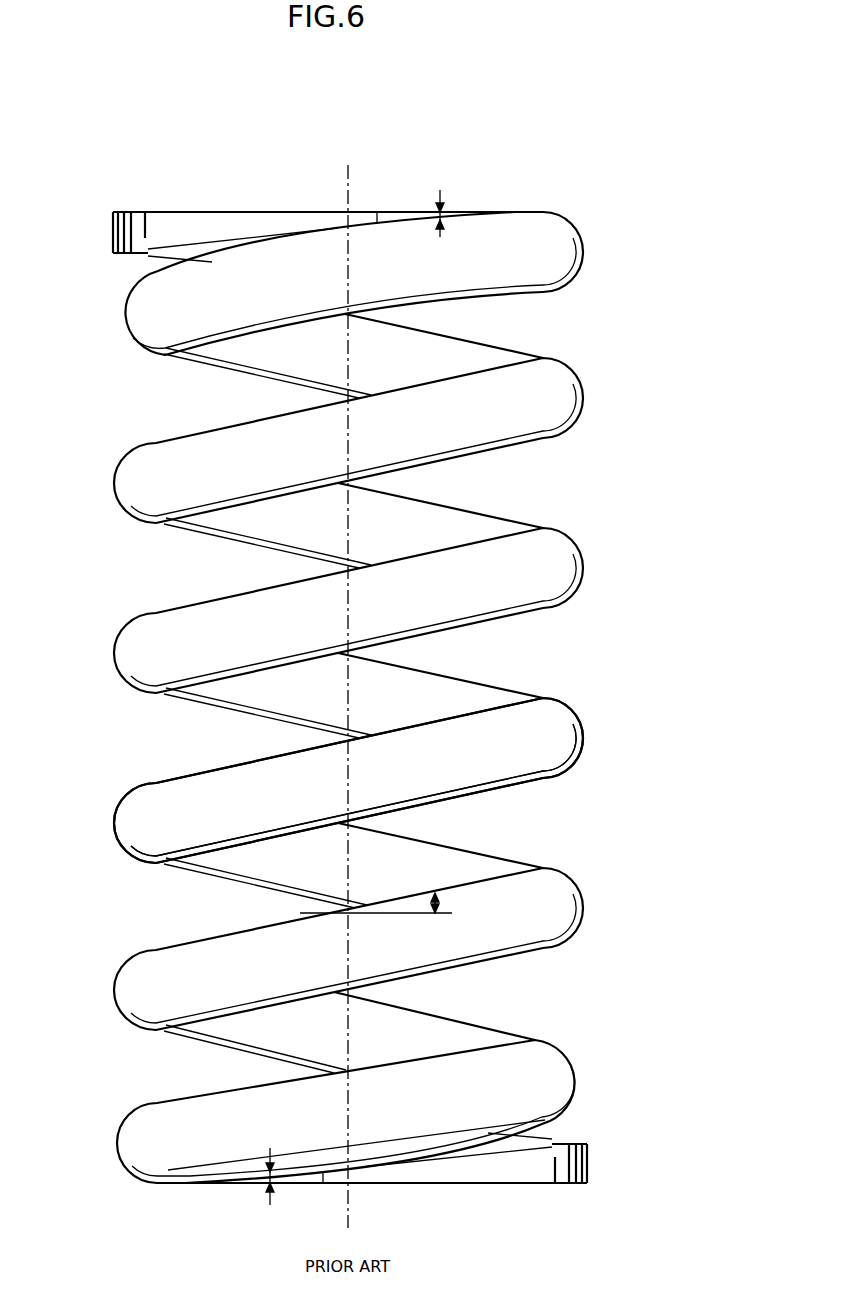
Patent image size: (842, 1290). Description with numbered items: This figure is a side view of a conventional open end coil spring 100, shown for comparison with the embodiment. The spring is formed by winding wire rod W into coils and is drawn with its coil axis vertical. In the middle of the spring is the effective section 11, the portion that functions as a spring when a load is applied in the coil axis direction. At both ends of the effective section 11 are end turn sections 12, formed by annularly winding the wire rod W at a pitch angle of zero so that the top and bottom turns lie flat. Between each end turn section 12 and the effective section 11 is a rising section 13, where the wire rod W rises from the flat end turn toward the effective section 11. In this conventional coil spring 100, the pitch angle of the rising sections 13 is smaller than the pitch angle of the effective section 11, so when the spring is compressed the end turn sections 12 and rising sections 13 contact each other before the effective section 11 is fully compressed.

The conventional open end coil spring 100 is at (402, 689).
The effective section 11 is at (550, 565).
The end turn sections 12 is at (231, 218).
The rising sections 13 is at (502, 263).
The wire rod W is at (550, 733).